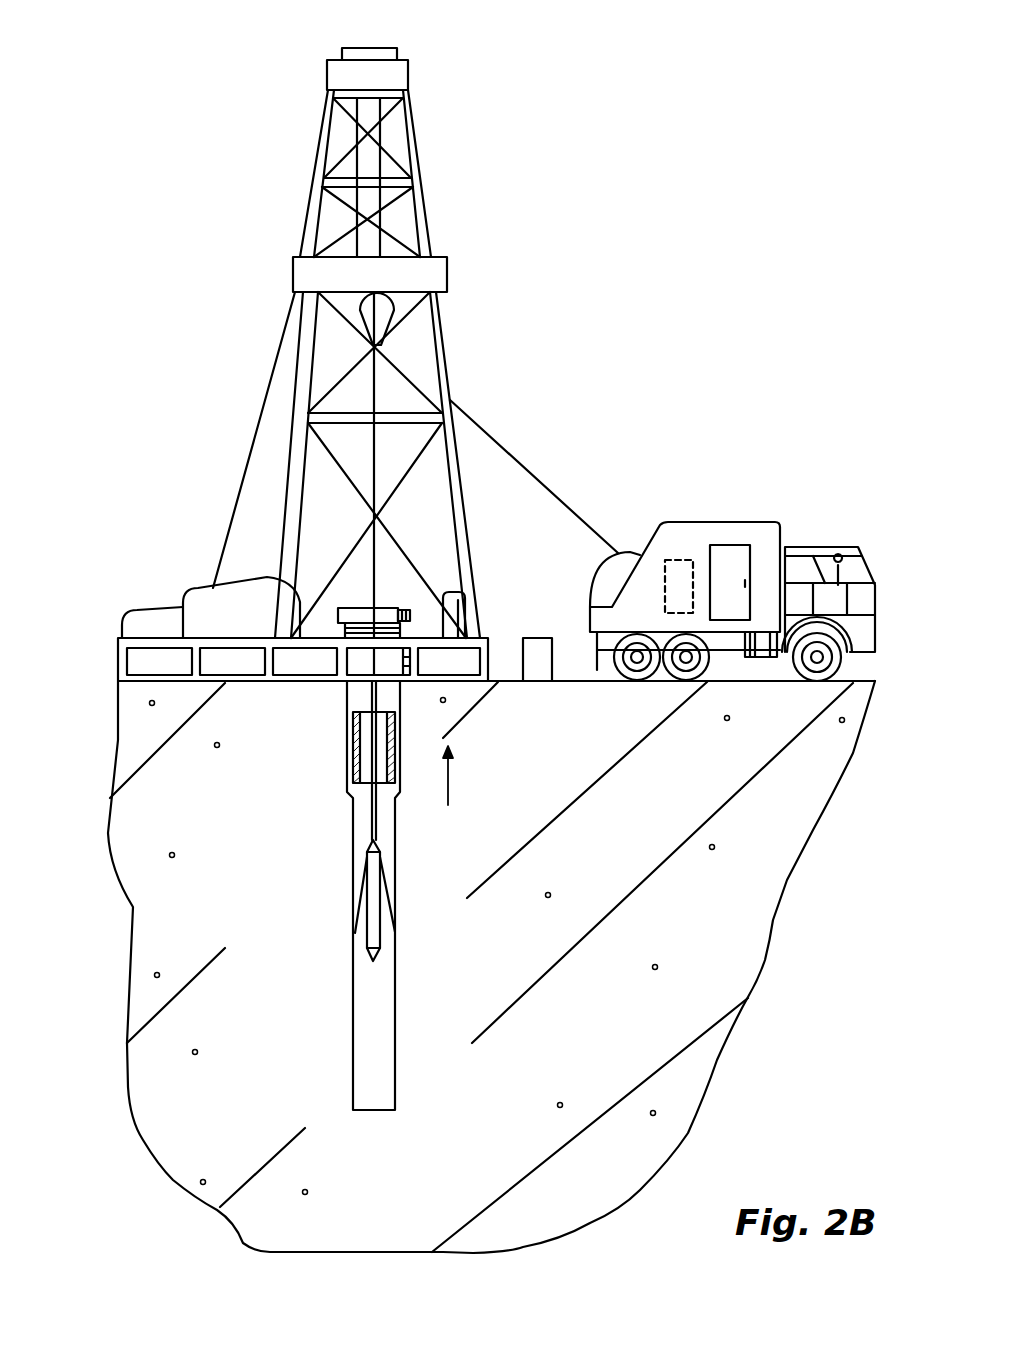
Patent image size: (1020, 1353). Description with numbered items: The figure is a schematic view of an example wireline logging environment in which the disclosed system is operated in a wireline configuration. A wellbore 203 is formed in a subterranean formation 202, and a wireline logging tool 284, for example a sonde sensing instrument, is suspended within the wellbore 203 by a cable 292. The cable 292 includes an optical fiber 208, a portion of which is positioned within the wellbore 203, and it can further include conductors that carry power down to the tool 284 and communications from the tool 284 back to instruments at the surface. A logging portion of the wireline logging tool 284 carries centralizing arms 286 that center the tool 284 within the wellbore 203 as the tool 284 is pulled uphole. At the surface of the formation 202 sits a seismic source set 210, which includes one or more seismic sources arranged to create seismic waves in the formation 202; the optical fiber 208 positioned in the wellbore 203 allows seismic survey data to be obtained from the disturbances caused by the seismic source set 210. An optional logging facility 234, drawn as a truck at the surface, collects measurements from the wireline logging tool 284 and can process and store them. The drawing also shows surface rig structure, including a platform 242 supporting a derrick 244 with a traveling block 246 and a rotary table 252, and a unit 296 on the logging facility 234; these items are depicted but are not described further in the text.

The subterranean formation 202 is at (626, 858).
The wellbore 203 is at (358, 815).
The optical fiber 208 is at (373, 815).
The seismic source set 210 is at (537, 637).
The logging facility 234 is at (748, 515).
The platform 242 is at (117, 657).
The derrick 244 is at (463, 510).
The traveling block 246 is at (370, 318).
The rotary table 252 is at (397, 608).
The wireline logging tool 284 is at (368, 888).
The centralizing arms 286 is at (356, 913).
The cable 292 is at (470, 418).
The control unit 296 is at (681, 558).